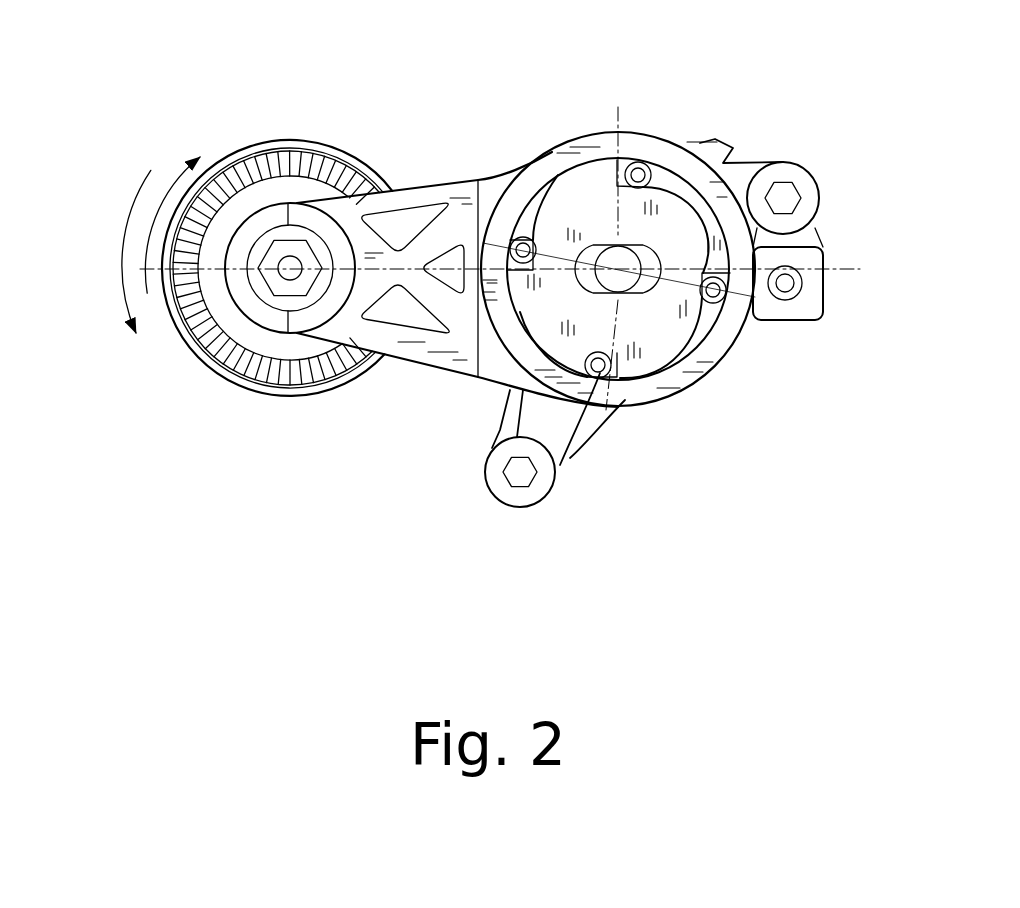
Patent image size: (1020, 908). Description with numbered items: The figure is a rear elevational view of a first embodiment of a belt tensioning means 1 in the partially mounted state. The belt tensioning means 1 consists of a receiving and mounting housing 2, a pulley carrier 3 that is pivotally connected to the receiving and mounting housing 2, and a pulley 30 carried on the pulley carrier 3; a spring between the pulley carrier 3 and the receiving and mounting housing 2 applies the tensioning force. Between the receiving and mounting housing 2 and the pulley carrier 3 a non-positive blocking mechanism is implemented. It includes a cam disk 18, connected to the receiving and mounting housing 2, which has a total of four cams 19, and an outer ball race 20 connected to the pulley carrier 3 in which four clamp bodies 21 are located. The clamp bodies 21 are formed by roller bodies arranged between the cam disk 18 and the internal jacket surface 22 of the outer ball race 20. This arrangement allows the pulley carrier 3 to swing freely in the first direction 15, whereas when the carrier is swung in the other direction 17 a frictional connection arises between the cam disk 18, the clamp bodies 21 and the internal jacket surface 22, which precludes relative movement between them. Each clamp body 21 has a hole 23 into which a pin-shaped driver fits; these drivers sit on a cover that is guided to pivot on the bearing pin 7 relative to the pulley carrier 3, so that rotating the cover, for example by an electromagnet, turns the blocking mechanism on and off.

The belt tensioning means 1 is at (362, 483).
The receiving and mounting housing 2 is at (767, 143).
The pulley carrier 3 is at (426, 168).
The bearing pin 7 is at (614, 255).
The first direction 15 is at (157, 203).
The other direction 17 is at (125, 237).
The cam disk 18 is at (636, 331).
The cams 19 is at (533, 310).
The outer ball race 20 is at (538, 178).
The clamp bodies 21 is at (648, 172).
The internal jacket surface 22 is at (704, 322).
The hole 23 is at (637, 162).
The pulley 30 is at (300, 140).